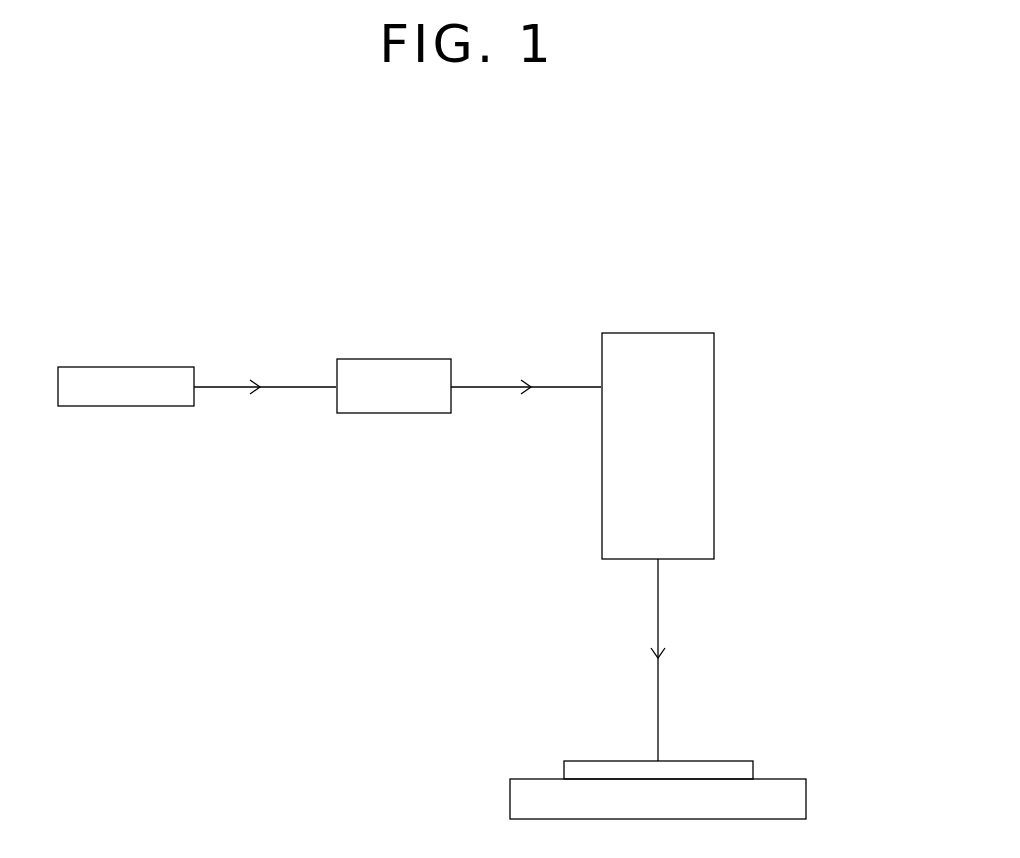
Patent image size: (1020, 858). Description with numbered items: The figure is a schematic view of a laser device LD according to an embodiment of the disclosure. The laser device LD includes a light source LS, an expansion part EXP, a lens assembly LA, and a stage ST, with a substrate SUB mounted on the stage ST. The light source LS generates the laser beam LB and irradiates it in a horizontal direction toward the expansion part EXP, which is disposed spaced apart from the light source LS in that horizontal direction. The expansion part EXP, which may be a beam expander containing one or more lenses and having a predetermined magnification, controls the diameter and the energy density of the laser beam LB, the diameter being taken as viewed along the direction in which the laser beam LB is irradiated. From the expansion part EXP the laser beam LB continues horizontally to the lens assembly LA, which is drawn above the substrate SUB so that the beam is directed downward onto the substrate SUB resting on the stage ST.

The laser device LD is at (736, 222).
The light source LS is at (146, 367).
The laser beam LB is at (270, 387).
The expansion part EXP is at (406, 359).
The lens assembly LA is at (672, 333).
The substrate SUB is at (741, 770).
The stage ST is at (793, 798).